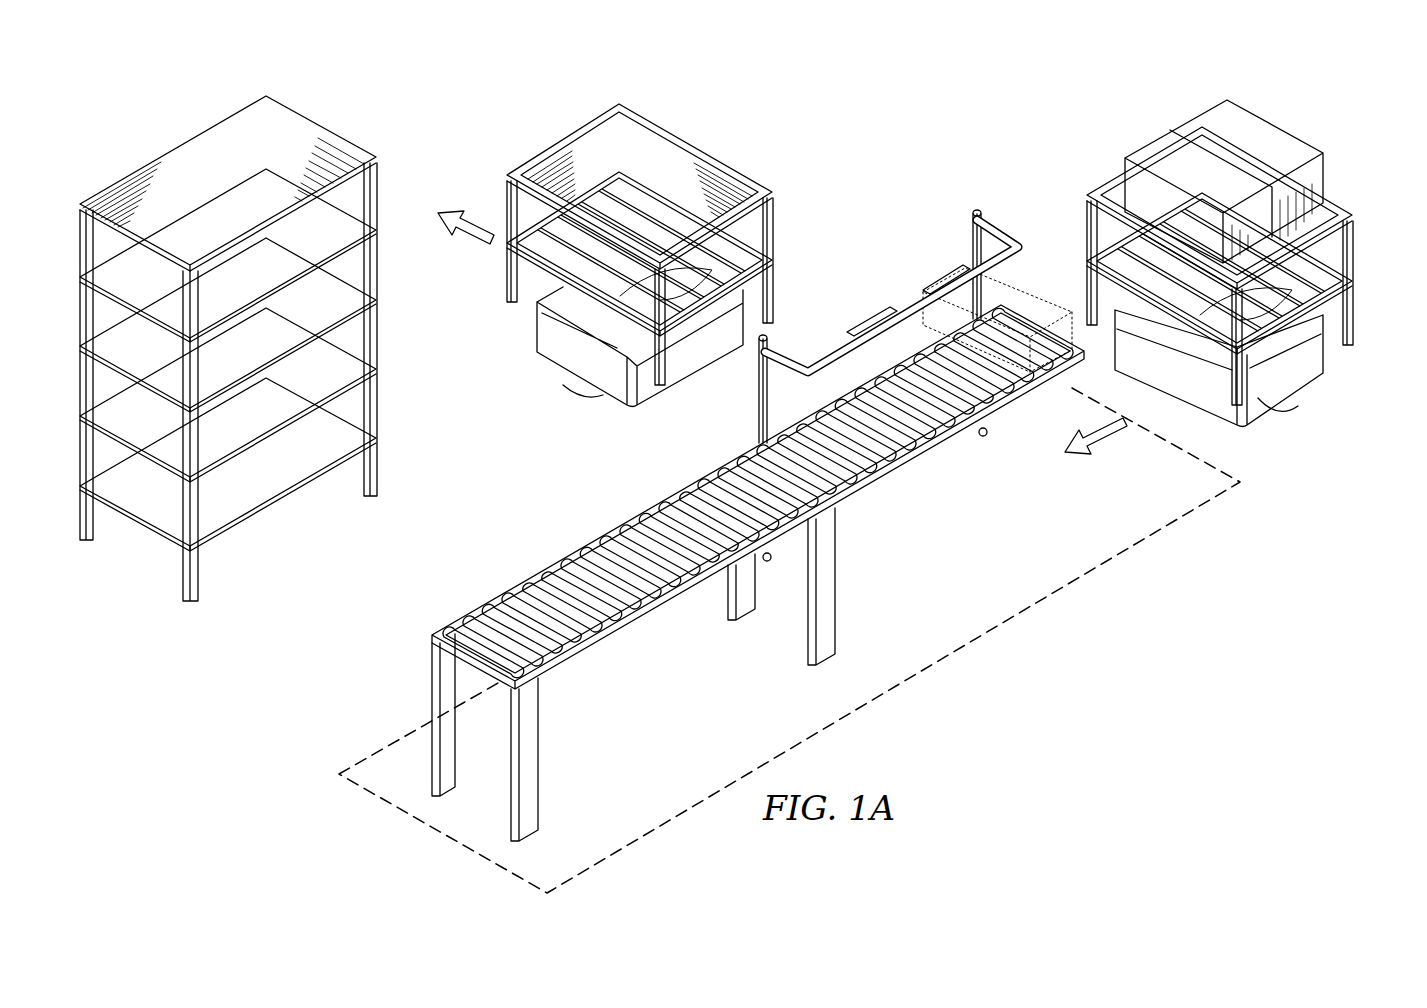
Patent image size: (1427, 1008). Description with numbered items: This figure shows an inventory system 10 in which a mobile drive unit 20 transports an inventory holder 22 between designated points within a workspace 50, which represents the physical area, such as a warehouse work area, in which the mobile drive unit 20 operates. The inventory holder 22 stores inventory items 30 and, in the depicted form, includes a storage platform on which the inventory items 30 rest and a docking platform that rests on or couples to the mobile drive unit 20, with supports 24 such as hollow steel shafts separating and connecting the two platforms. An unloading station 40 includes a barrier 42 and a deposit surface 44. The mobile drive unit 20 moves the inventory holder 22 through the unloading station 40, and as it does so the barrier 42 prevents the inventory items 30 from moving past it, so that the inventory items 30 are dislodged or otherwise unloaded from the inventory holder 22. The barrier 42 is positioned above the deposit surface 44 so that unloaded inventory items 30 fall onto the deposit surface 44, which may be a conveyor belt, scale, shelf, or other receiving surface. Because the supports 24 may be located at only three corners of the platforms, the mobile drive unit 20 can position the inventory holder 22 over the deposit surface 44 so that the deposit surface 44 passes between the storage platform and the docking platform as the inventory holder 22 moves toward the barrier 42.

The inventory system 10 is at (1037, 110).
The mobile drive unit 20 is at (1298, 370).
The inventory holder 22 is at (188, 148).
The supports 24 is at (775, 240).
The inventory items 30 is at (1262, 135).
The unloading station 40 is at (1020, 612).
The barrier 42 is at (1003, 220).
The deposit surface 44 is at (636, 511).
The workspace 50 is at (237, 714).